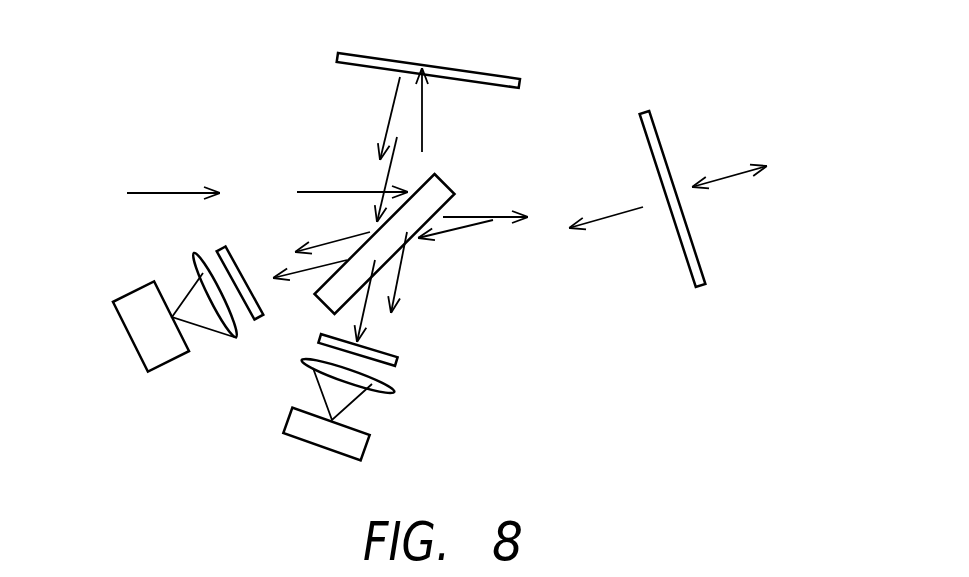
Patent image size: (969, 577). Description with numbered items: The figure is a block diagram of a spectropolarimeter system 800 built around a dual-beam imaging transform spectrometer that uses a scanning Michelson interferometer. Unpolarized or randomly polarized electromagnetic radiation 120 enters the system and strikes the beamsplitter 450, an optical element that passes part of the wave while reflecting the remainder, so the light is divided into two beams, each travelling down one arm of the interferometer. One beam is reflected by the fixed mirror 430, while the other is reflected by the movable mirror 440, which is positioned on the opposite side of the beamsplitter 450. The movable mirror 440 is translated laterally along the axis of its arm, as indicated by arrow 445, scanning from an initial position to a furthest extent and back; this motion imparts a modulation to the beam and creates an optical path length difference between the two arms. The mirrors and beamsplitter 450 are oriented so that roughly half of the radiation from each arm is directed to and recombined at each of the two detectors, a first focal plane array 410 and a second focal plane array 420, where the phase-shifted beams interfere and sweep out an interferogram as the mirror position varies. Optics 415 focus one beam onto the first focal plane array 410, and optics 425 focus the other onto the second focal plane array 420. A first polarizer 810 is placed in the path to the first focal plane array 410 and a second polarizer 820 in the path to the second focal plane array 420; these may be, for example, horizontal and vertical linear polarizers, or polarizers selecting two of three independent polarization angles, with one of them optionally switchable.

The system 800 is at (248, 55).
The electromagnetic radiation 120 is at (152, 192).
The fixed mirror 430 is at (480, 70).
The beamsplitter 450 is at (447, 180).
The movable mirror 440 is at (698, 290).
The arrow 445 is at (732, 178).
The second polarizer 820 is at (242, 263).
The optics 425 is at (238, 337).
The second focal plane array 420 is at (125, 294).
The first polarizer 810 is at (391, 357).
The optics 415 is at (385, 388).
The first focal plane array 410 is at (370, 435).